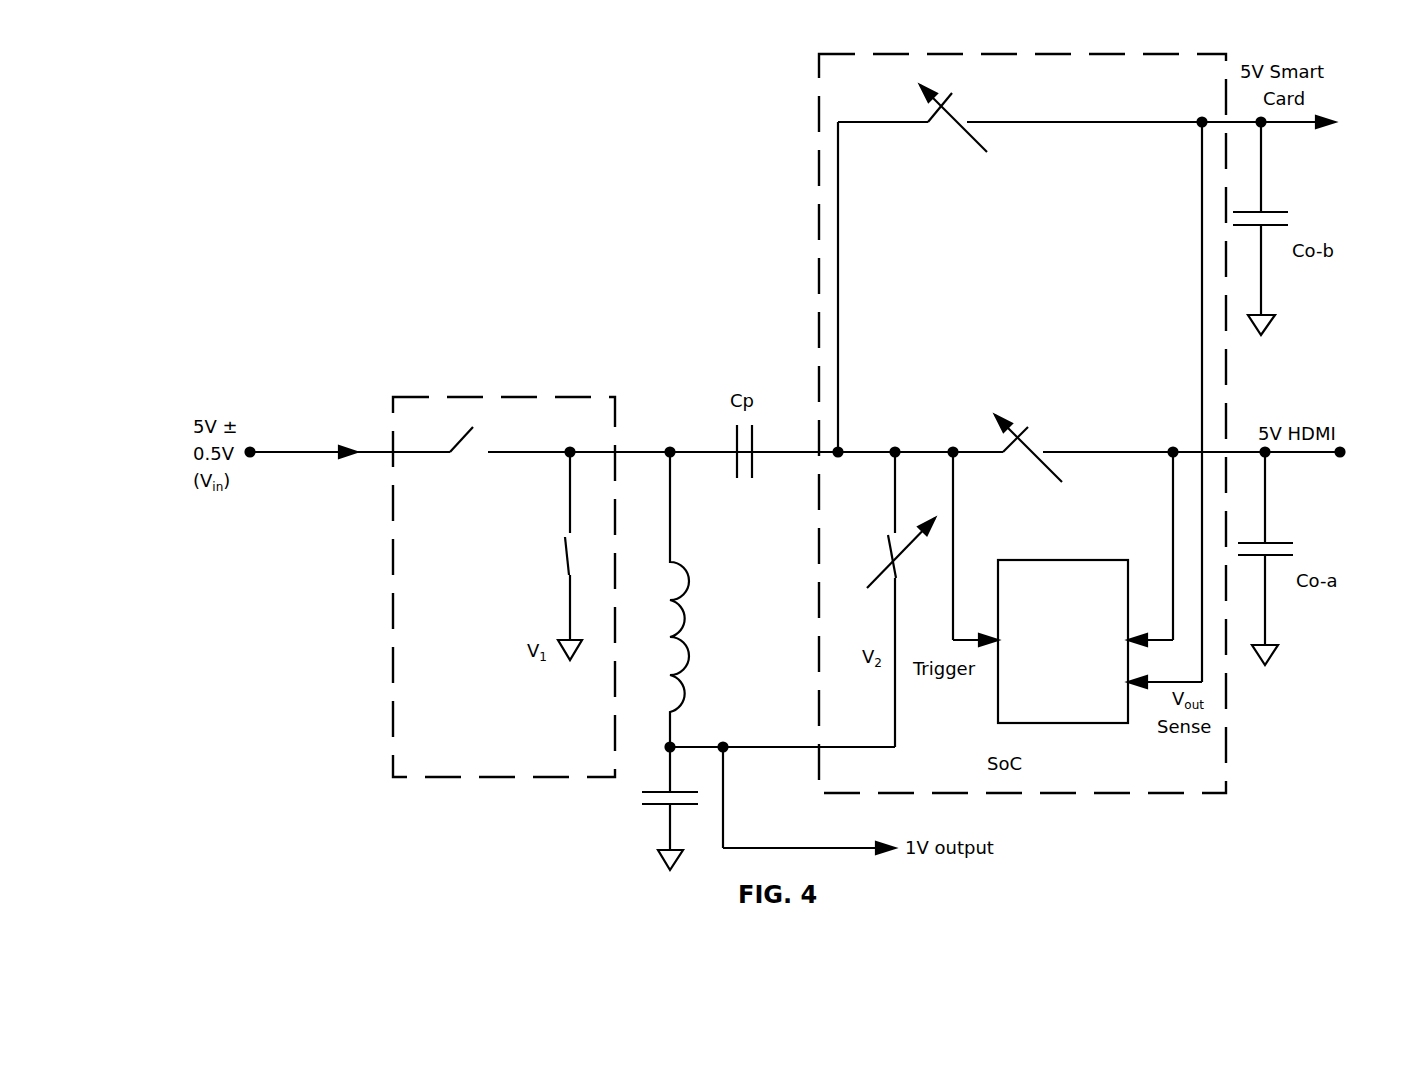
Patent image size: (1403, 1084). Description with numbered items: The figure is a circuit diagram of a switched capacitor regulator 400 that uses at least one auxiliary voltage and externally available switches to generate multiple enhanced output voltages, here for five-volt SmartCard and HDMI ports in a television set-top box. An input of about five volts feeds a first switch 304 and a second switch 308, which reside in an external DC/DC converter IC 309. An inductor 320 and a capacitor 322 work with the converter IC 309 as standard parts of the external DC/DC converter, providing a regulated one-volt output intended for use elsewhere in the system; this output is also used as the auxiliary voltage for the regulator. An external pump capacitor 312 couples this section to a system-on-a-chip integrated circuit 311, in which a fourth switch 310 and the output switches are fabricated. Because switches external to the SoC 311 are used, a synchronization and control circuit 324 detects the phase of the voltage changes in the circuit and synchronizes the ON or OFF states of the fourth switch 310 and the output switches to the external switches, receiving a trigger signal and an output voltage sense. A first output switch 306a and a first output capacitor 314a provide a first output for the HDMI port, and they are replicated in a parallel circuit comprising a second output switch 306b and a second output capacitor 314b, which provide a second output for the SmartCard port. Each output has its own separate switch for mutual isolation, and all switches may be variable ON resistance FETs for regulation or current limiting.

The switched capacitor regulator 400 is at (586, 202).
The switch SW1 304 is at (455, 455).
The switch SW2 308 is at (566, 548).
The external DC/DC converter IC 309 is at (393, 770).
The capacitor Cp 312 is at (735, 442).
The inductor 320 is at (688, 566).
The capacitor 322 is at (652, 807).
The switch SW4 310 is at (893, 572).
The switch SW3a 306a is at (1000, 443).
The switch SW3b 306b is at (928, 125).
The synchronization and control circuit 324 is at (1068, 723).
The system-on-a-chip integrated circuit 311 is at (1205, 795).
The output capacitor Co-a 314a is at (1287, 542).
The output capacitor Co-b 314b is at (1277, 210).